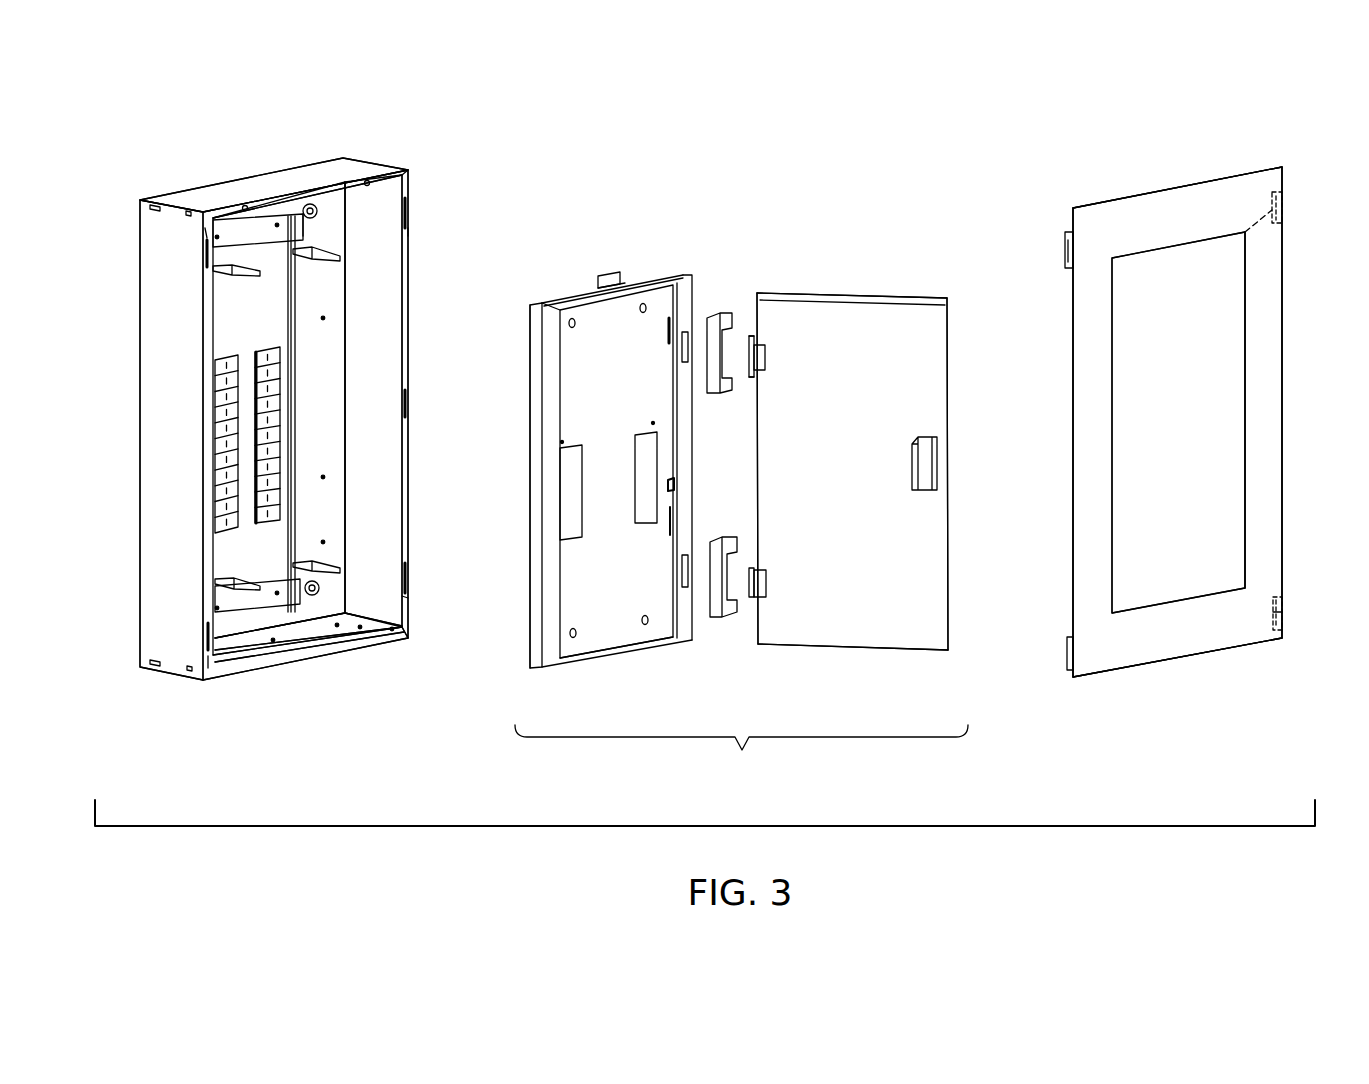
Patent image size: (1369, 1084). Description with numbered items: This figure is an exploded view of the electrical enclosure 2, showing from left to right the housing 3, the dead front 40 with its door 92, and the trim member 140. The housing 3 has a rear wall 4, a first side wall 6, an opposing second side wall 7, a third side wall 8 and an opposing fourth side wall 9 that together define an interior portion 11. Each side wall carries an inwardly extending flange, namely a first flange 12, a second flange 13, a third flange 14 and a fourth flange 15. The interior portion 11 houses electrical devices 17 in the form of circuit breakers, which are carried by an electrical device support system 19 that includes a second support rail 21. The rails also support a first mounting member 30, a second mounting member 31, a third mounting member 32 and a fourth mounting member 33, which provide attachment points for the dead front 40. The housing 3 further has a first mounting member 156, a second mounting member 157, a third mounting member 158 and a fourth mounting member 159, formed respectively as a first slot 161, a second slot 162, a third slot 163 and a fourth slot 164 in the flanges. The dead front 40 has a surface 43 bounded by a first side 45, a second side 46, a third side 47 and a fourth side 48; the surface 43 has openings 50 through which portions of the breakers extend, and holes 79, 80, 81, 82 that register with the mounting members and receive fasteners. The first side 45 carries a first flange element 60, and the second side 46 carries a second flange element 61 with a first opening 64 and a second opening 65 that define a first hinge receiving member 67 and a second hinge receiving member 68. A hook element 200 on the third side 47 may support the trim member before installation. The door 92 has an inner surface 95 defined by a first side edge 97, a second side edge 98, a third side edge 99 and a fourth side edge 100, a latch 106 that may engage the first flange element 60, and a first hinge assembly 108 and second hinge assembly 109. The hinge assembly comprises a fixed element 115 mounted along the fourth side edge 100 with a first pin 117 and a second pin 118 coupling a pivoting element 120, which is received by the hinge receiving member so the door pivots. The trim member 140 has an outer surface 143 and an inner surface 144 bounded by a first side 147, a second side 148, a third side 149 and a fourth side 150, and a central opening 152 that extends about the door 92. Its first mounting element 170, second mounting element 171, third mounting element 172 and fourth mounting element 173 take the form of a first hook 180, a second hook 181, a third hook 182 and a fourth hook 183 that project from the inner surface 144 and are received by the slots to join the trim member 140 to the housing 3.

The electrical enclosure 2 is at (585, 128).
The housing 3 is at (165, 584).
The rear wall 4 is at (325, 292).
The first side wall 6 is at (175, 346).
The second side wall 7 is at (385, 336).
The third side wall 8 is at (255, 186).
The fourth side wall 9 is at (290, 665).
The interior portion 11 is at (388, 632).
The first inwardly extending flange 12 is at (208, 498).
The second inwardly extending flange 13 is at (405, 488).
The third inwardly extending flange 14 is at (292, 198).
The fourth inwardly extending flange 15 is at (345, 650).
The electrical devices 17 is at (325, 386).
The electrical device support system 19 is at (284, 552).
The second support rail 21 is at (298, 462).
The first mounting member 30 is at (212, 268).
The second mounting member 31 is at (326, 250).
The third mounting member 32 is at (215, 586).
The fourth mounting member 33 is at (328, 563).
The dead front 40 is at (742, 762).
The surface 43 is at (603, 367).
The first side 45 is at (538, 303).
The second side 46 is at (658, 280).
The third side 47 is at (637, 285).
The fourth side 48 is at (610, 668).
The openings 50 is at (640, 505).
The first flange element 60 is at (549, 568).
The second flange element 61 is at (683, 492).
The first opening 64 is at (683, 312).
The second opening 65 is at (684, 600).
The first hinge receiving member 67 is at (680, 347).
The second hinge receiving member 68 is at (690, 575).
The hole 79 is at (548, 304).
The hole 80 is at (612, 283).
The hole 81 is at (572, 640).
The hole 82 is at (645, 628).
The door 92 is at (887, 530).
The inner surface 95 is at (903, 562).
The first side edge 97 is at (850, 293).
The second side edge 98 is at (892, 652).
The third side edge 99 is at (949, 510).
The fourth side edge 100 is at (757, 325).
The latch 106 is at (926, 432).
The first hinge assembly 108 is at (720, 310).
The second hinge assembly 109 is at (750, 616).
The fixed element 115 is at (766, 358).
The first pin 117 is at (756, 342).
The second pin 118 is at (756, 376).
The pivoting element 120 is at (760, 337).
The trim member 140 is at (1298, 612).
The outer surface 143 is at (1163, 660).
The inner surface 144 is at (1243, 500).
The first side 147 is at (1150, 208).
The second side 148 is at (1200, 659).
The third side 149 is at (1073, 420).
The fourth side 150 is at (1282, 420).
The central opening 152 is at (1245, 420).
The first mounting member 156 is at (204, 232).
The second mounting member 157 is at (412, 231).
The third mounting member 158 is at (211, 664).
The fourth mounting member 159 is at (409, 568).
The first slot 161 is at (205, 238).
The second slot 162 is at (410, 212).
The third slot 163 is at (206, 648).
The fourth slot 164 is at (386, 598).
The first mounting element 170 is at (1092, 250).
The second mounting element 171 is at (1262, 200).
The third mounting element 172 is at (1090, 657).
The fourth mounting element 173 is at (1262, 618).
The first hook 180 is at (1065, 246).
The second hook 181 is at (1245, 240).
The third hook 182 is at (1067, 653).
The fourth hook 183 is at (1280, 608).
The hook element 200 is at (605, 275).